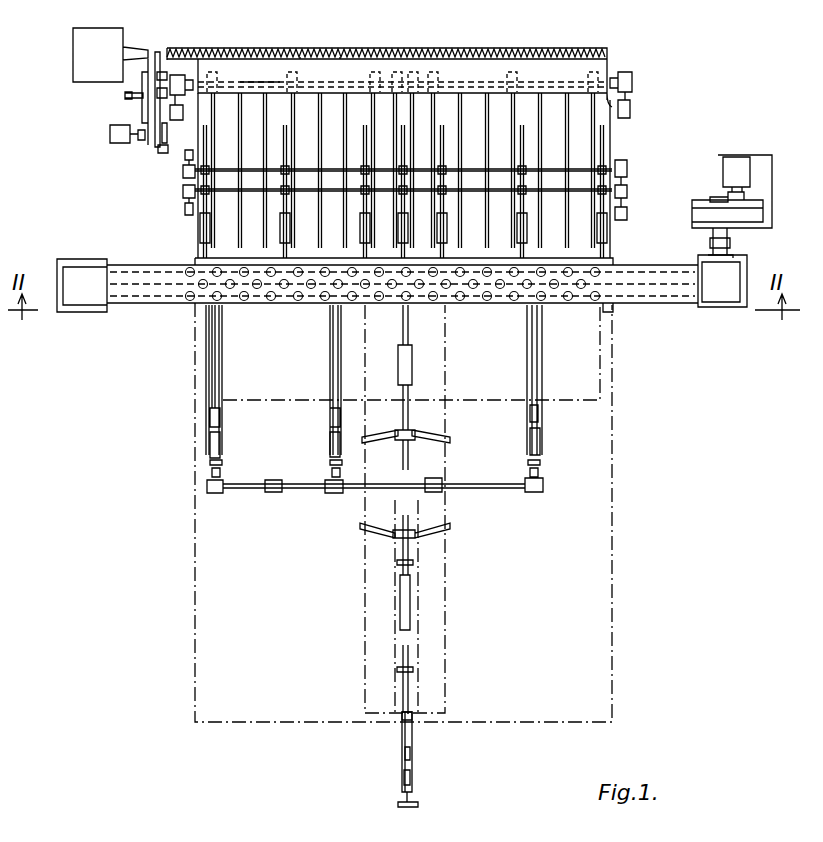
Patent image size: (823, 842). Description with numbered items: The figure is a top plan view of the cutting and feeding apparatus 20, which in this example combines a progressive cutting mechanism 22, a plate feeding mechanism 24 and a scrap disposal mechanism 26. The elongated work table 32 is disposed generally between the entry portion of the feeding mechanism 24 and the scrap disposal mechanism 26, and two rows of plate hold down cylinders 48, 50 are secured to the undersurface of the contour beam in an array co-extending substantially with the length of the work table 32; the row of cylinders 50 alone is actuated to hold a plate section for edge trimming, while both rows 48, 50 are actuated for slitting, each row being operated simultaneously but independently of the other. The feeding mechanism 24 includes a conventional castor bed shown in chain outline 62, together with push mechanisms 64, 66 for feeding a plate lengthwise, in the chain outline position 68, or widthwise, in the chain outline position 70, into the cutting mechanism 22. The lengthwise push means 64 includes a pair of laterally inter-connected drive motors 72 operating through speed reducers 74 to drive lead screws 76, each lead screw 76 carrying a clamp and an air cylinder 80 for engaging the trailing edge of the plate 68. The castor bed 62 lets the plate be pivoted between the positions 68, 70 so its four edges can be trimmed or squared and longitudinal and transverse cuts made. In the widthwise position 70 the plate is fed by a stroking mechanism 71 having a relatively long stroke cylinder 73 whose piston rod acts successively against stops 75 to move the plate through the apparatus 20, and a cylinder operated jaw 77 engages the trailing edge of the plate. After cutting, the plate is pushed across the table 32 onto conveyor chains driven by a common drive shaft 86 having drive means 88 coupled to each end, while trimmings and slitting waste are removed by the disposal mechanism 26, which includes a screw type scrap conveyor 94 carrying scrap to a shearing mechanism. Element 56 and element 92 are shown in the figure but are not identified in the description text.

The apparatus 20 is at (650, 118).
The progressive cutting mechanism 22 is at (748, 258).
The plate feeding mechanism 24 is at (568, 408).
The scrap disposal mechanism 26 is at (405, 46).
The work table 32 is at (610, 310).
The plate hold down cylinders 48 is at (285, 296).
The plate hold down cylinders 50 is at (195, 262).
The guide 56 is at (200, 300).
The castor bed 62 is at (612, 618).
The lengthwise push mechanism 64 is at (465, 400).
The widthwise push mechanism 66 is at (405, 785).
The lengthwise plate position 68 is at (600, 400).
The widthwise plate position 70 is at (447, 580).
The stroking mechanism 71 is at (412, 782).
The drive motors 72 is at (273, 480).
The long stroke cylinder 73 is at (412, 758).
The speed reducers 74 is at (332, 490).
The stops 75 is at (413, 562).
The lead screws 76 is at (333, 420).
The cylinder operated jaw 77 is at (412, 725).
The air cylinder 80 is at (212, 450).
The common drive shaft 86 is at (258, 82).
The drive means 88 is at (195, 110).
The motor 92 is at (140, 48).
The screw type scrap conveyor 94 is at (325, 50).